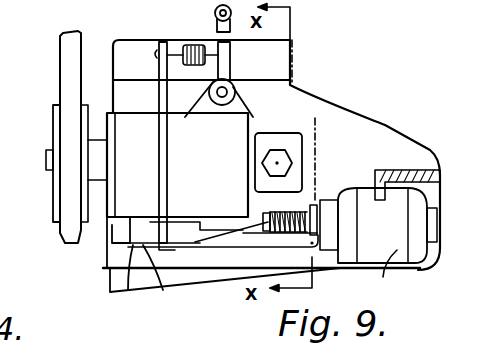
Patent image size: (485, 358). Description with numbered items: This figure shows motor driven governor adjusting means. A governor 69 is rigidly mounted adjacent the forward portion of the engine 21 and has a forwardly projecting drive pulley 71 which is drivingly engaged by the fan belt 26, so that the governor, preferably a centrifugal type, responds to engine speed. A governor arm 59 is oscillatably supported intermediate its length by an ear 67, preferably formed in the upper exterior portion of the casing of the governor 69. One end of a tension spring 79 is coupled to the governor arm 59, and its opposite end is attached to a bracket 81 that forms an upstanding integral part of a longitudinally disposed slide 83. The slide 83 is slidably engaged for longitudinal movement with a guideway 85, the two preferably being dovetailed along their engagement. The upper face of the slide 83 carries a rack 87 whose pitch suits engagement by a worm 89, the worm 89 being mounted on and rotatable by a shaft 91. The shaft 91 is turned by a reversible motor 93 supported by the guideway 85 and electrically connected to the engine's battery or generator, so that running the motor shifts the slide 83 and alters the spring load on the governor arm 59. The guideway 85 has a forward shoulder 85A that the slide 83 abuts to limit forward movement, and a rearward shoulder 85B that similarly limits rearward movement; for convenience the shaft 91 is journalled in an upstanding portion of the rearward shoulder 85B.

The engine 21 is at (134, 40).
The fan belt 26 is at (73, 70).
The drive pulley 71 is at (57, 122).
The tension spring 79 is at (195, 45).
The governor arm 59 is at (229, 64).
The ear 67 is at (246, 108).
The bracket 81 is at (168, 135).
The governor 69 is at (208, 172).
The worm 89 is at (265, 215).
The shaft 91 is at (268, 221).
The slide 83 is at (181, 240).
The rack 87 is at (190, 268).
The guideway 85 is at (158, 288).
The forward shoulder 85A is at (132, 268).
The rearward shoulder 85B is at (333, 228).
The reversible motor 93 is at (387, 272).